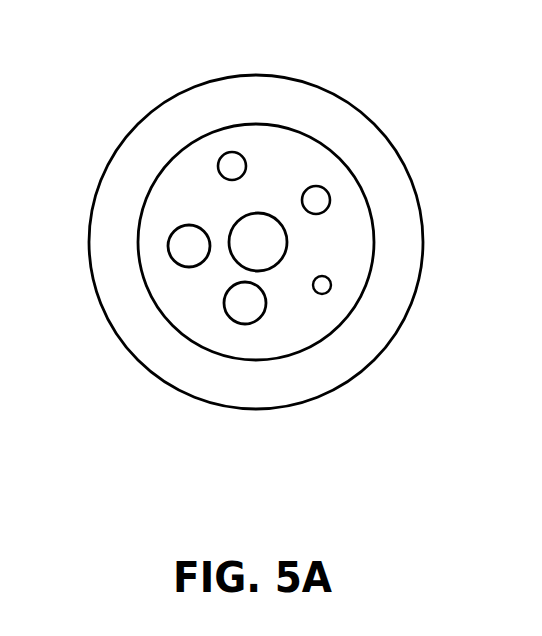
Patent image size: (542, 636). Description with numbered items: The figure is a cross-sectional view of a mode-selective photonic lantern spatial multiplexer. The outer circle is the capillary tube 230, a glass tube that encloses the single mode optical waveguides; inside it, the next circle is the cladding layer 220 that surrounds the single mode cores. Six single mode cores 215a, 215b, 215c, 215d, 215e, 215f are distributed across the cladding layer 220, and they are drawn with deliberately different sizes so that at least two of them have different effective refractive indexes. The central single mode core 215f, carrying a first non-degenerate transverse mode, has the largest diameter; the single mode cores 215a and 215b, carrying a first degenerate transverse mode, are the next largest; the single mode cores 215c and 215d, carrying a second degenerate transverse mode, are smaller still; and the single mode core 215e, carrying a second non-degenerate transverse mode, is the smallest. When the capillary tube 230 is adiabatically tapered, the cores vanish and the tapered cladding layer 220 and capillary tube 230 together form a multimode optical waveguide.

The capillary tube 230 is at (302, 78).
The cladding layer 220 is at (230, 126).
The single mode core 215a is at (237, 312).
The single mode core 215b is at (178, 252).
The single mode core 215c is at (221, 167).
The single mode core 215d is at (313, 202).
The single mode core 215e is at (322, 285).
The single mode core 215f is at (267, 248).